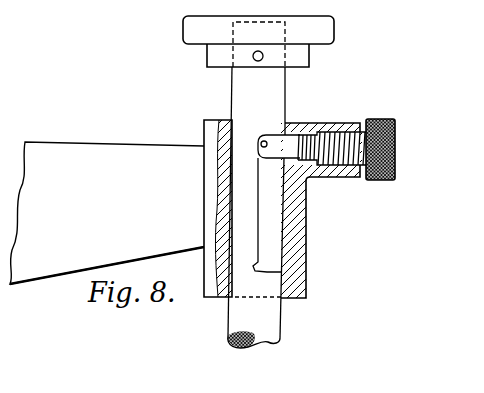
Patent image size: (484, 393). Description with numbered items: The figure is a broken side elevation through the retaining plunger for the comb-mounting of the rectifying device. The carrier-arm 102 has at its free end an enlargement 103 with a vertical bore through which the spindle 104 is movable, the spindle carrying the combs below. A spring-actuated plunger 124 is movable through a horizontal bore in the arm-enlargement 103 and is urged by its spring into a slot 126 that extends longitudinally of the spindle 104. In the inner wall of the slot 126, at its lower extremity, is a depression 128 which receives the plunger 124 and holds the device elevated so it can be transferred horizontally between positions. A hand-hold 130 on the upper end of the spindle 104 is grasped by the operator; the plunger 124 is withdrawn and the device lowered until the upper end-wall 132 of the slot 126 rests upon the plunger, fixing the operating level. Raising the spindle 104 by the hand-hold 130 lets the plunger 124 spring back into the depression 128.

The carrier-arm 102 is at (77, 152).
The enlargement 103 is at (306, 226).
The spindle 104 is at (236, 313).
The spring-actuated plunger 124 is at (292, 141).
The slot 126 is at (276, 198).
The depression 128 is at (256, 227).
The hand-hold 130 is at (200, 36).
The upper end-wall 132 is at (261, 143).